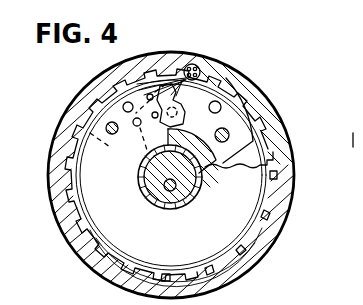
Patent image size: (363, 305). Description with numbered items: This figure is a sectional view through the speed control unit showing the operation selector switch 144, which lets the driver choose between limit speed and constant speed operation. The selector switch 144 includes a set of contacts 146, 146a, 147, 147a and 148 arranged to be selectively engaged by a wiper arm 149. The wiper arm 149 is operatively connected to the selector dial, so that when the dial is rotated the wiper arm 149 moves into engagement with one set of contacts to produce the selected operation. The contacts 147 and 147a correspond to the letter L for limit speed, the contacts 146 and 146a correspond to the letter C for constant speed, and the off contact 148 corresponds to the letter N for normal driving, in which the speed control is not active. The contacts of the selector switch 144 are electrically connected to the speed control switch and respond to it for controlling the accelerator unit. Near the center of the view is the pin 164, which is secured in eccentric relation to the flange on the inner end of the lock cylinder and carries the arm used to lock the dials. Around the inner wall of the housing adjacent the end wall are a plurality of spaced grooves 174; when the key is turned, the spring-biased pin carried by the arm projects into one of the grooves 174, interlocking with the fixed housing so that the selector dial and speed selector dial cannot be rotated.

The operation selector switch 144 is at (124, 150).
The contact 146 is at (124, 104).
The contact 146a is at (137, 127).
The contact 147 is at (173, 68).
The contact 147a is at (186, 117).
The off contact 148 is at (243, 89).
The wiper arm 149 is at (225, 74).
The pin 164 is at (166, 206).
The spaced grooves 174 is at (258, 99).